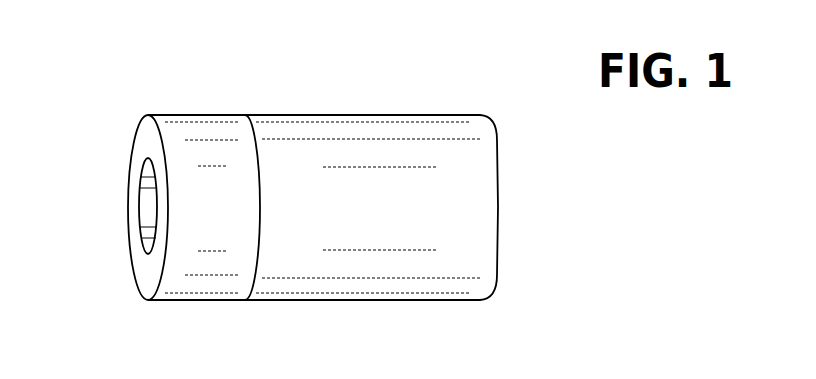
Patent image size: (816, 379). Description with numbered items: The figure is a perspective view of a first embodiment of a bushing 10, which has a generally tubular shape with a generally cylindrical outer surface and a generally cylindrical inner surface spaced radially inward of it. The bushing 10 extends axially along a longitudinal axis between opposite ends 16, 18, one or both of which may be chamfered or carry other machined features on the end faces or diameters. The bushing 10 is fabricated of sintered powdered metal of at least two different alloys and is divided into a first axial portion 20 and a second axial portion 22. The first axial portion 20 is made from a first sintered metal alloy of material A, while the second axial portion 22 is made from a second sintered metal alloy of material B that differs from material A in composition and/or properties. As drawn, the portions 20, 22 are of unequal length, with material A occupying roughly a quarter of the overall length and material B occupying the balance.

The bushing 10 is at (494, 93).
The end 16 is at (142, 147).
The end 18 is at (497, 196).
The first axial portion 20 is at (195, 115).
The second axial portion 22 is at (368, 115).
The material A is at (221, 292).
The material B is at (377, 290).